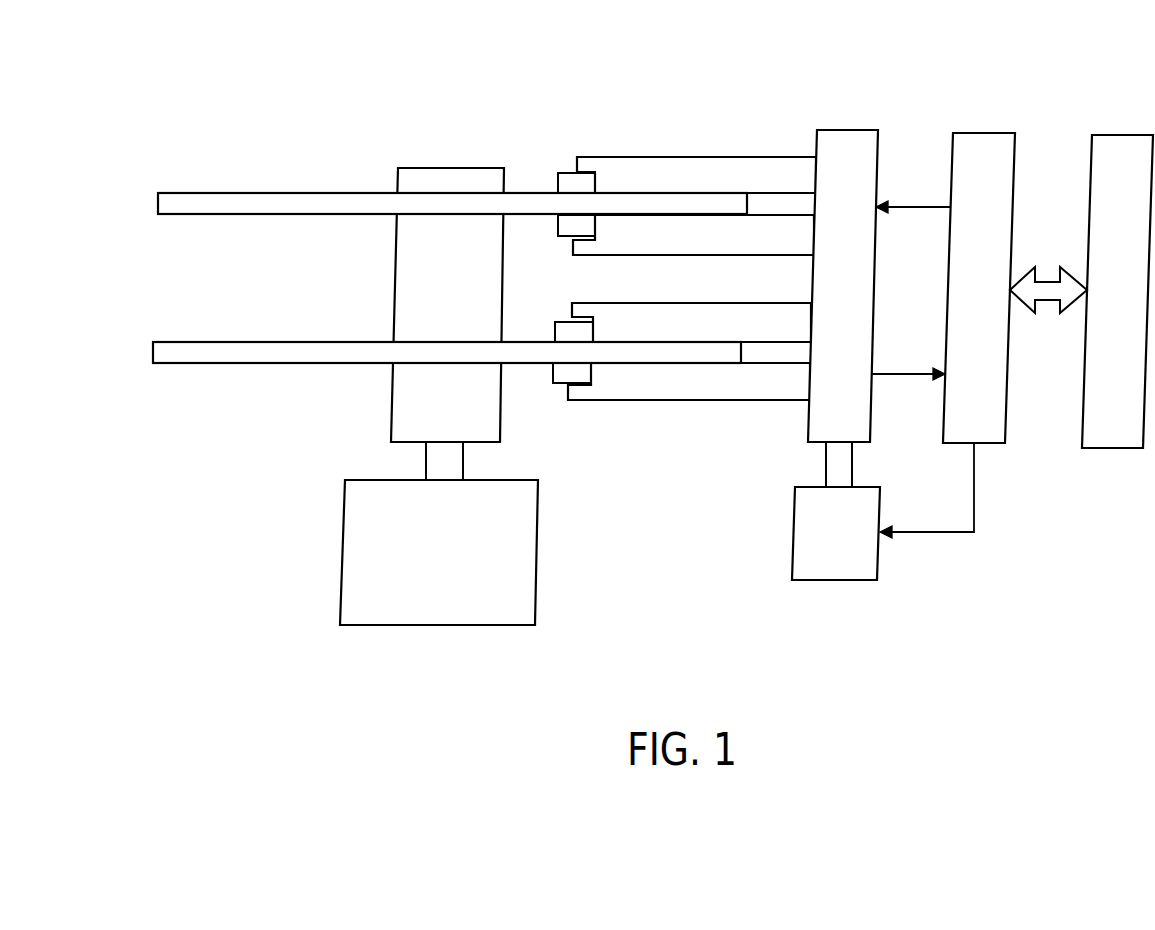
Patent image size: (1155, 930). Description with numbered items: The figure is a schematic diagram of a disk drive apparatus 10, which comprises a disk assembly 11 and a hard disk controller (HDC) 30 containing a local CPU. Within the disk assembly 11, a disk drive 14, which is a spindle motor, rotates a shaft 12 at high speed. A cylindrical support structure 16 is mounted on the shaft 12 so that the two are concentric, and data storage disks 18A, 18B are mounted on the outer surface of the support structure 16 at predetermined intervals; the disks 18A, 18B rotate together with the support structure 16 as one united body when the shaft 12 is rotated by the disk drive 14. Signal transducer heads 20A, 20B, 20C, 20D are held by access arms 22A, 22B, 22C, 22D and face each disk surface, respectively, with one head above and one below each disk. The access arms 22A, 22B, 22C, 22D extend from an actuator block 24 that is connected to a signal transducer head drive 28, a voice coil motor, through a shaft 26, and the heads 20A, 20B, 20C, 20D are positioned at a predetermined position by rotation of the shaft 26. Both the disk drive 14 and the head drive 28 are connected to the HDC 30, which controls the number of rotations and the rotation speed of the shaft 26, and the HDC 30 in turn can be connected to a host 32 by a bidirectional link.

The disk drive apparatus 10 is at (613, 88).
The disk assembly 11 is at (606, 496).
The shaft 12 is at (426, 468).
The disk drive (spindle motor) 14 is at (456, 572).
The cylindrical support structure 16 is at (433, 168).
The data storage disk 18A is at (258, 193).
The data storage disk 18B is at (248, 342).
The signal transducer head 20A is at (558, 178).
The signal transducer head 20B is at (557, 222).
The signal transducer head 20C is at (555, 328).
The signal transducer head 20D is at (552, 383).
The access arm 22A is at (685, 157).
The access arm 22B is at (690, 255).
The access arm 22C is at (662, 303).
The access arm 22D is at (673, 400).
The actuator 24 is at (843, 286).
The shaft 26 is at (826, 468).
The signal transducer head drive (voice coil motor) 28 is at (851, 552).
The hard disk controller (HDC) 30 is at (988, 381).
The host 32 is at (1125, 381).